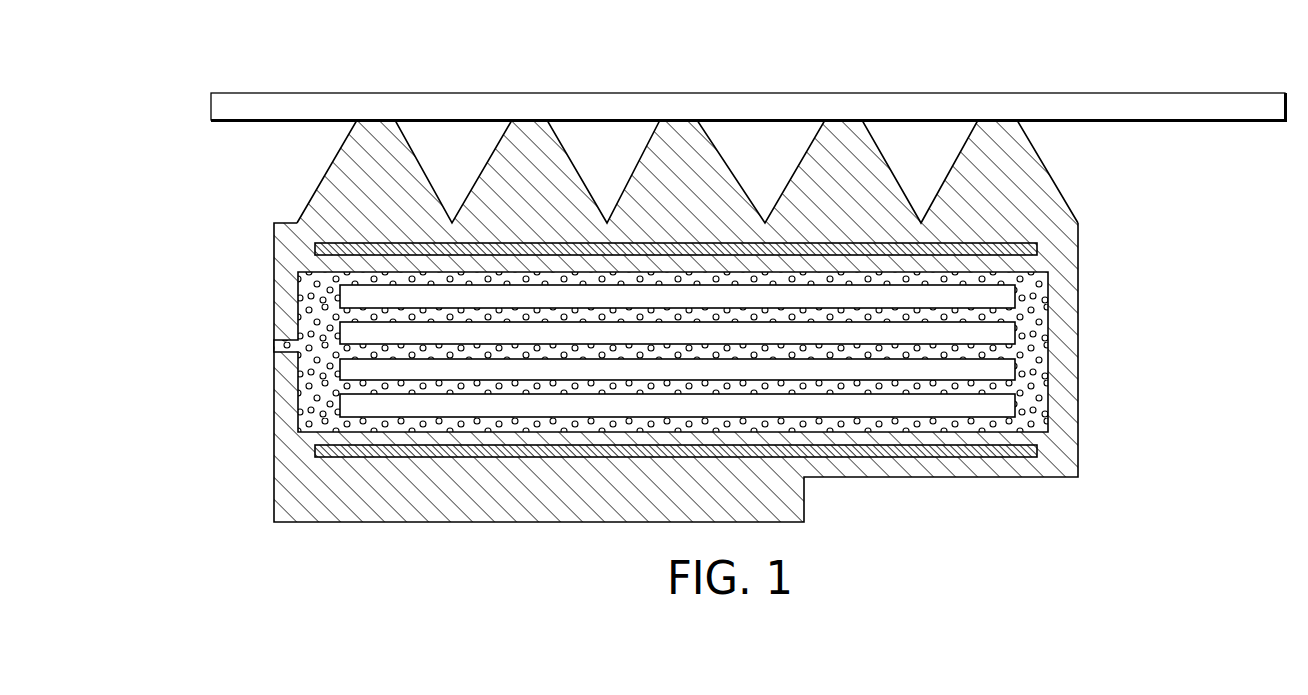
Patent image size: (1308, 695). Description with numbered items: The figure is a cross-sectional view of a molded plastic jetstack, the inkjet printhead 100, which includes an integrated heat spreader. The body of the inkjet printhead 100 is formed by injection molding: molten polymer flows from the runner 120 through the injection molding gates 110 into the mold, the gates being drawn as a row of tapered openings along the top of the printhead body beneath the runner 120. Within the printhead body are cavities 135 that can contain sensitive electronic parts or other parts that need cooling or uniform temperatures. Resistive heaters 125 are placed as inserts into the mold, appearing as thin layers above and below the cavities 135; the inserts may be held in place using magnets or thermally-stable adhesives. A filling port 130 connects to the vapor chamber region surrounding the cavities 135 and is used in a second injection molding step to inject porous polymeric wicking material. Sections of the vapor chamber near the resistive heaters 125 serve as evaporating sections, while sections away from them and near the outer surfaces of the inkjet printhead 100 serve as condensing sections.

The inkjet printhead 100 is at (306, 165).
The injection molding gates 110 is at (1001, 128).
The runner 120 is at (200, 108).
The resistive heaters 125 is at (1037, 249).
The filling port 130 is at (264, 347).
The cavities 135 is at (1018, 333).